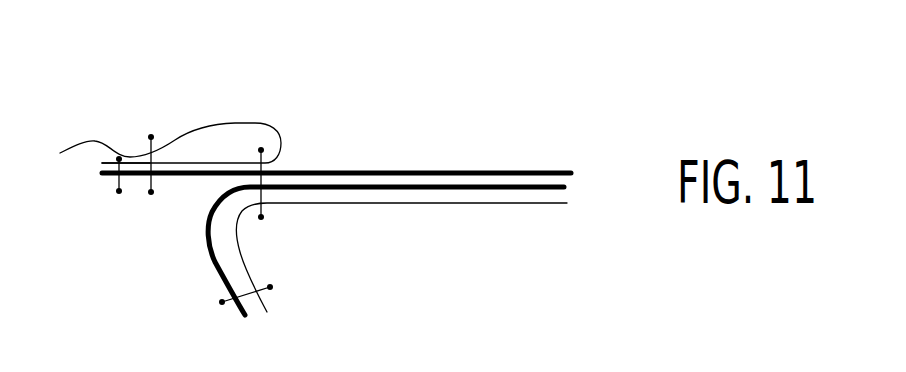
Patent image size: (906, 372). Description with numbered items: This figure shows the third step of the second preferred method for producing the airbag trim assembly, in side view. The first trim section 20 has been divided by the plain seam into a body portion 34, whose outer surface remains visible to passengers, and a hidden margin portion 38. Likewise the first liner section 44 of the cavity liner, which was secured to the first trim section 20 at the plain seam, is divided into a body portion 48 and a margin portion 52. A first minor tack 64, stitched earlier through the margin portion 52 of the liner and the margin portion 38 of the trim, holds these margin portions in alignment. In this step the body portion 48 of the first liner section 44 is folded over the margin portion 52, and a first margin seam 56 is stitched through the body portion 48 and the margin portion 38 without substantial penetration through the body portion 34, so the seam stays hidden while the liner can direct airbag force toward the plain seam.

The first trim section 20 is at (383, 170).
The body portion 34 is at (488, 170).
The margin portion 38 is at (190, 173).
The first liner section 44 is at (253, 122).
The body portion 48 is at (223, 125).
The margin portion 52 is at (200, 163).
The first margin seam 56 is at (150, 136).
The first minor tack 64 is at (119, 191).